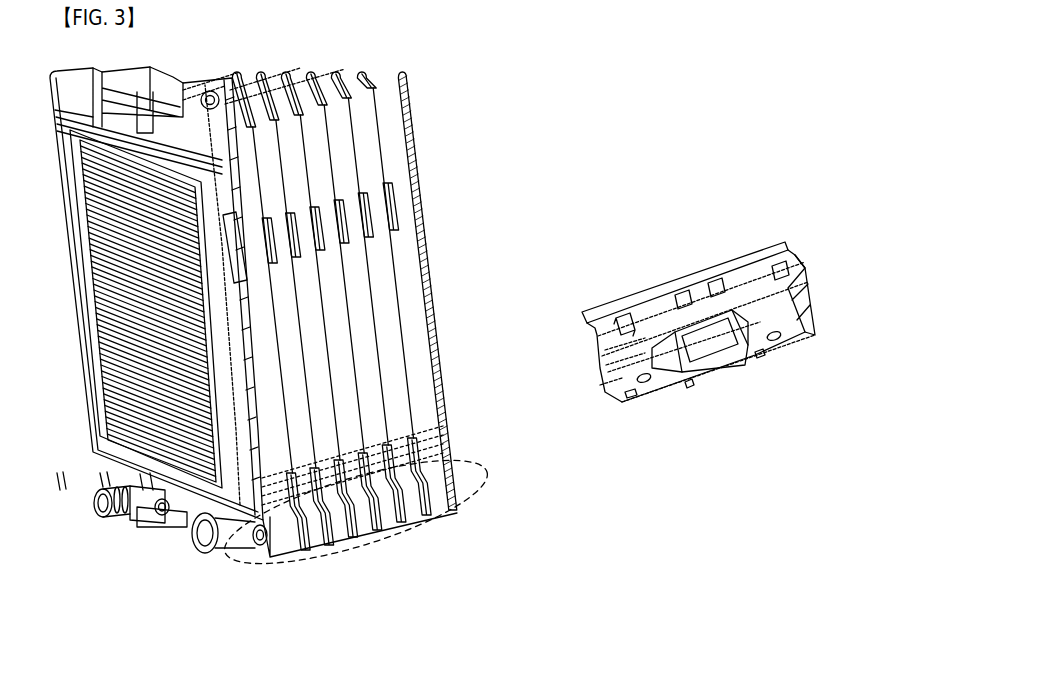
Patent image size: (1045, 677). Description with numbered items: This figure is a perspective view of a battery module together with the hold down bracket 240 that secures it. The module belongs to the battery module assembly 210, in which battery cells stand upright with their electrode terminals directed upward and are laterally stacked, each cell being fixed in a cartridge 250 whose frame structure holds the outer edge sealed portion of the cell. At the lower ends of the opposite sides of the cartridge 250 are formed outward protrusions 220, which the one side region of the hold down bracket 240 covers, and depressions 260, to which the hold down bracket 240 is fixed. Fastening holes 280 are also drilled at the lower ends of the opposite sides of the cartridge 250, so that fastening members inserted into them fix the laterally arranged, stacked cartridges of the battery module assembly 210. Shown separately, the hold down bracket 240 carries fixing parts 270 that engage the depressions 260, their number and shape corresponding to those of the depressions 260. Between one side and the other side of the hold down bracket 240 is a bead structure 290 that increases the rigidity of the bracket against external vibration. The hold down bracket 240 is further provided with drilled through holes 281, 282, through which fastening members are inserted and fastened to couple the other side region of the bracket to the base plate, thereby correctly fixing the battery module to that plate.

The battery module assembly 210 is at (404, 255).
The outward protrusions 220 is at (480, 493).
The hold down bracket 240 is at (790, 253).
The cartridge 250 is at (418, 153).
The depressions 260 is at (412, 494).
The fixing parts 270 is at (624, 305).
The fastening holes 280 is at (255, 551).
The through hole 281 is at (664, 385).
The through hole 282 is at (792, 339).
The bead structure 290 is at (716, 347).